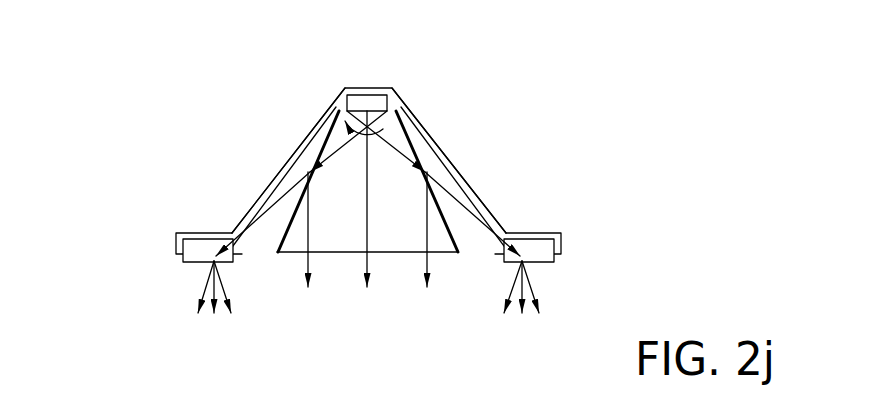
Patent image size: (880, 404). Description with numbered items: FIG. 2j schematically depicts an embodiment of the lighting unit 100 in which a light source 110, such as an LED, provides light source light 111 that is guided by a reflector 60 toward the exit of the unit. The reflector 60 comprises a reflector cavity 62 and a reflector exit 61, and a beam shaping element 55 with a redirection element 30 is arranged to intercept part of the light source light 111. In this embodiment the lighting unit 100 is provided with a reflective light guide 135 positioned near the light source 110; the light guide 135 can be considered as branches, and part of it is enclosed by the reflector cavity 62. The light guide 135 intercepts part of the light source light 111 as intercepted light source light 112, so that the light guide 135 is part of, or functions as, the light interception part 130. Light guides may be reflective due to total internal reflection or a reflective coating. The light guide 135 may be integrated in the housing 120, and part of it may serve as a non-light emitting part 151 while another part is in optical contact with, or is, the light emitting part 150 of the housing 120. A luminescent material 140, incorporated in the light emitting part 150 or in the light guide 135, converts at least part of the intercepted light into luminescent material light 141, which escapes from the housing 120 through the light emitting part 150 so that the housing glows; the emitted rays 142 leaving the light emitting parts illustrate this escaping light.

The lighting unit 100 is at (118, 110).
The light source 110 is at (376, 95).
The light source light 111 is at (369, 262).
The intercepted light source light 112 is at (318, 128).
The housing 120 is at (587, 112).
The light interception part 130 is at (343, 90).
The light guide 135 is at (478, 197).
The luminescent material 140 is at (188, 238).
The luminescent material light 141 is at (508, 285).
The emitted light rays 142 is at (200, 290).
The light emitting part 150 is at (190, 262).
The non-light emitting part 151 is at (287, 157).
The redirection element 30 is at (393, 108).
The beam shaping element 55 is at (292, 268).
The reflector 60 is at (392, 172).
The reflector exit 61 is at (350, 233).
The reflector cavity 62 is at (387, 232).